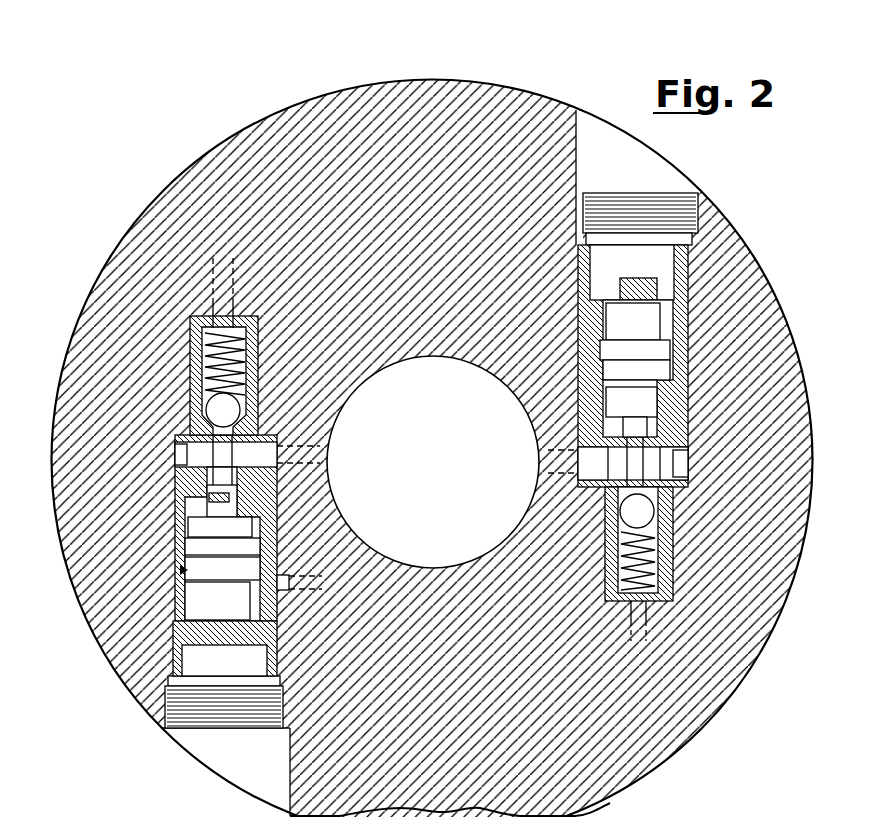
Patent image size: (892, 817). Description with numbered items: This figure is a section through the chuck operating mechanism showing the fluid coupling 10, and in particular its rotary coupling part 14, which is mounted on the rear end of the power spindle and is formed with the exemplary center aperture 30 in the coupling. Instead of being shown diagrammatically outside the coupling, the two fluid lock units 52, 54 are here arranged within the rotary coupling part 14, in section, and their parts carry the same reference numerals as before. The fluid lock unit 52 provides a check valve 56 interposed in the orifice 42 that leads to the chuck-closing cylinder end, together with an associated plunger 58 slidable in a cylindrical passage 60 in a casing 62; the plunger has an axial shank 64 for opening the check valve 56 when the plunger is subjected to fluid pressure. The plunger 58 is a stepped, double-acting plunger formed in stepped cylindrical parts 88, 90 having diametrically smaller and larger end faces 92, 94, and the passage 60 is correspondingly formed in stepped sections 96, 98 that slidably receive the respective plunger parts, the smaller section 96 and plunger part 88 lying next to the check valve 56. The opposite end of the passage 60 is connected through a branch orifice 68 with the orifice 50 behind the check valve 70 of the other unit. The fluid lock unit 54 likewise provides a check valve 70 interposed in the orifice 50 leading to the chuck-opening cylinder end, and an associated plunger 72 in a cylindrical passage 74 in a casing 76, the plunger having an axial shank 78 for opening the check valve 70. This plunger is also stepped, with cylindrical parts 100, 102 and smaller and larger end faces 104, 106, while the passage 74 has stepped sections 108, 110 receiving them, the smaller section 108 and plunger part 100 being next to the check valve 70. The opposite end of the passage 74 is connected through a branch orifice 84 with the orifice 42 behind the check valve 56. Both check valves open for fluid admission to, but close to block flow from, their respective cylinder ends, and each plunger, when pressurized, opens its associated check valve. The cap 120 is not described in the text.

The fluid coupling 10 is at (480, 72).
The rotary coupling part 14 is at (268, 112).
The center aperture 30 is at (470, 500).
The orifice 42 is at (610, 461).
The orifice 50 is at (213, 303).
The fluid lock unit 52 is at (582, 430).
The fluid lock unit 54 is at (283, 510).
The check valve 56 is at (624, 510).
The plunger 58 is at (624, 385).
The cylindrical passage 60 is at (648, 392).
The casing 62 is at (590, 448).
The axial shank 64 is at (620, 476).
The branch orifice 68 is at (595, 296).
The check valve 70 is at (234, 413).
The plunger 72 is at (287, 518).
The cylindrical passage 74 is at (262, 481).
The casing 76 is at (180, 568).
The axial shank 78 is at (248, 441).
The branch orifice 84 is at (290, 578).
The plunger part 88 is at (672, 408).
The plunger part 90 is at (668, 335).
The smaller end face 92 is at (680, 440).
The larger end face 94 is at (650, 298).
The passage section 96 is at (684, 462).
The passage section 98 is at (660, 300).
The plunger part 100 is at (212, 517).
The plunger part 102 is at (183, 580).
The smaller end face 104 is at (170, 458).
The larger end face 106 is at (210, 595).
The passage section 108 is at (188, 457).
The passage section 110 is at (170, 680).
The threaded cap 120 is at (740, 816).